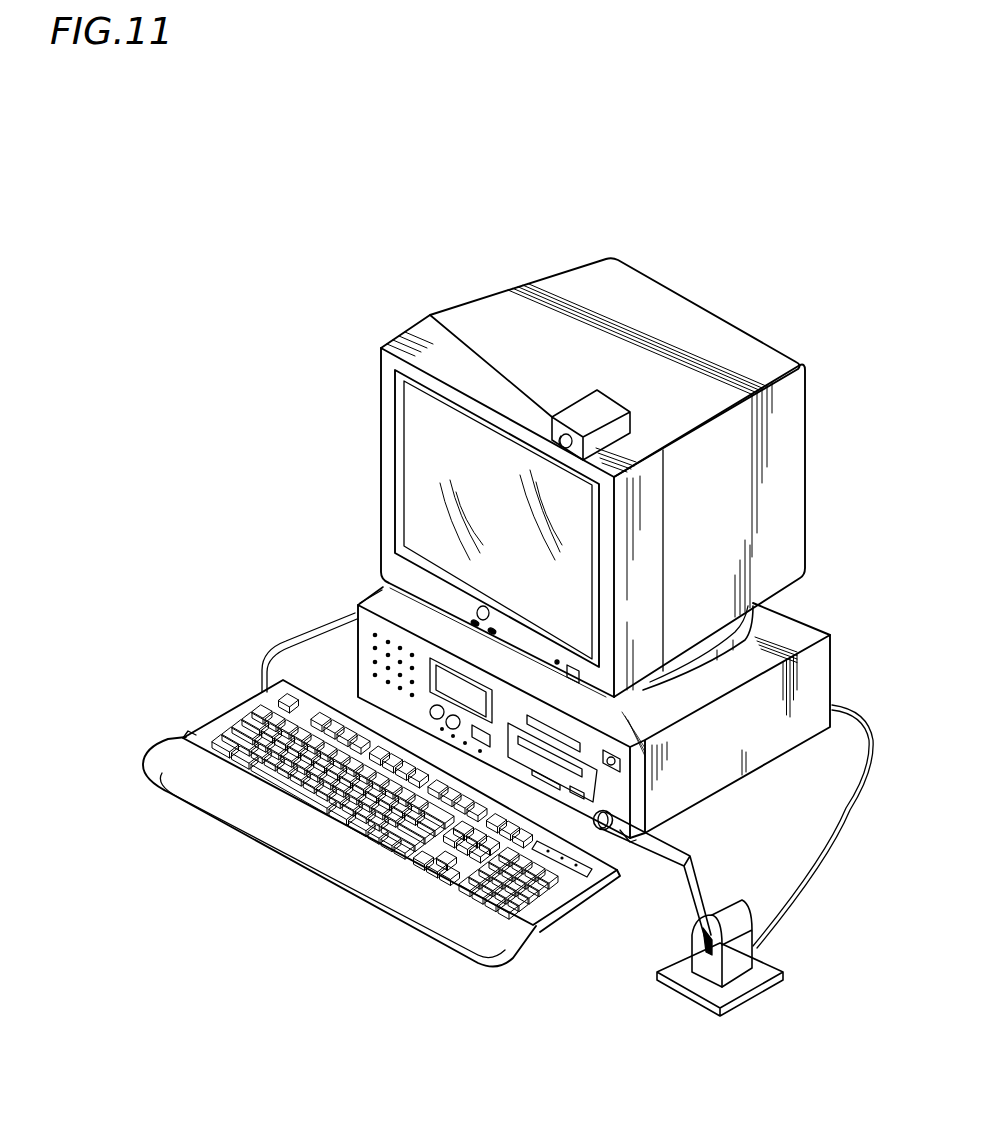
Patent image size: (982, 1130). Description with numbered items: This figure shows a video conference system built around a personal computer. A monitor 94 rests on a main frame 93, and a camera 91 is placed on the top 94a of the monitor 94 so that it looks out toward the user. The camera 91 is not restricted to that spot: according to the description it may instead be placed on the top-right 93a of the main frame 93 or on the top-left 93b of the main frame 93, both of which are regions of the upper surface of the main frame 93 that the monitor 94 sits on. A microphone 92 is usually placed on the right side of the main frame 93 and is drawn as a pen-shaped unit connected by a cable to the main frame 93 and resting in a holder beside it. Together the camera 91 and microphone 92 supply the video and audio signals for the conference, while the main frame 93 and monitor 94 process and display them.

The camera 91 is at (614, 388).
The microphone 92 is at (655, 837).
The main frame 93 is at (364, 650).
The top-right of the main frame 93a is at (698, 664).
The top-left of the main frame 93b is at (374, 598).
The monitor 94 is at (381, 453).
The top of the monitor 94a is at (590, 367).